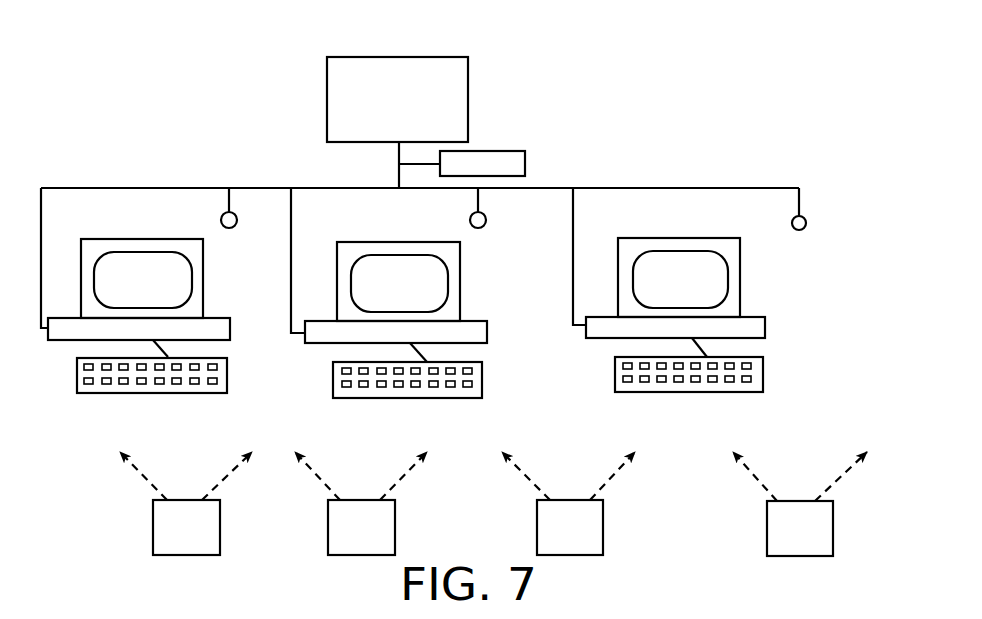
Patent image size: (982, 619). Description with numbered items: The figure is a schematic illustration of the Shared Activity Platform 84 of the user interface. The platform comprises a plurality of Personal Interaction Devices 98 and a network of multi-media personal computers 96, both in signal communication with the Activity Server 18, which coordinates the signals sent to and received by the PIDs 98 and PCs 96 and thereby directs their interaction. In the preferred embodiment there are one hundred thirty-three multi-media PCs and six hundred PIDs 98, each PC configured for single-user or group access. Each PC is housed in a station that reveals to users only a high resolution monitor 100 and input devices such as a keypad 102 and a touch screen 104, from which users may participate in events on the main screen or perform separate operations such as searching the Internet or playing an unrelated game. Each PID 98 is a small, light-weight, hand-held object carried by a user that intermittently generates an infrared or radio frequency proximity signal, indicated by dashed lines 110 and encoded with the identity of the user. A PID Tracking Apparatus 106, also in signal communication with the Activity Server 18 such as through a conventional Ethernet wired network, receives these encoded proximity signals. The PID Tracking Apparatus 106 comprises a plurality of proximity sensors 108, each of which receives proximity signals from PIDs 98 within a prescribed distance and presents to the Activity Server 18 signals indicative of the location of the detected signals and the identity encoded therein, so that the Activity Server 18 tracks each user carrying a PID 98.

The Activity Server 18 is at (372, 57).
The Shared Activity Platform 84 is at (142, 160).
The network of multi-media personal computers 96 is at (575, 175).
The high resolution monitor 100 is at (492, 151).
The keypad 102 is at (485, 375).
The touch screen 104 is at (432, 274).
The PID Tracking Apparatus 106 is at (812, 193).
The proximity sensor 108 is at (805, 228).
The dashed lines 110 is at (125, 483).
The Personal Interaction Device 98 is at (132, 537).